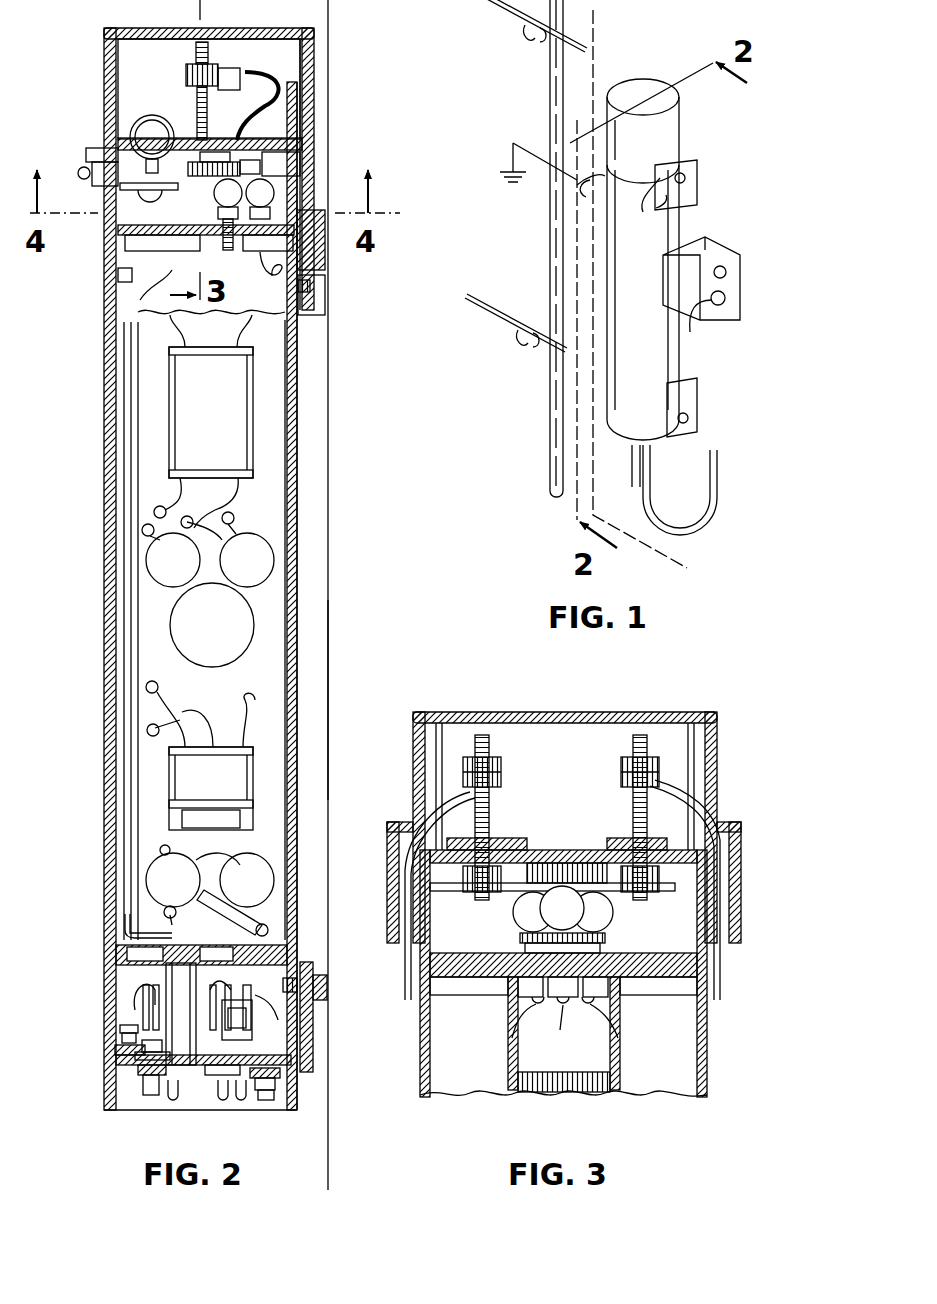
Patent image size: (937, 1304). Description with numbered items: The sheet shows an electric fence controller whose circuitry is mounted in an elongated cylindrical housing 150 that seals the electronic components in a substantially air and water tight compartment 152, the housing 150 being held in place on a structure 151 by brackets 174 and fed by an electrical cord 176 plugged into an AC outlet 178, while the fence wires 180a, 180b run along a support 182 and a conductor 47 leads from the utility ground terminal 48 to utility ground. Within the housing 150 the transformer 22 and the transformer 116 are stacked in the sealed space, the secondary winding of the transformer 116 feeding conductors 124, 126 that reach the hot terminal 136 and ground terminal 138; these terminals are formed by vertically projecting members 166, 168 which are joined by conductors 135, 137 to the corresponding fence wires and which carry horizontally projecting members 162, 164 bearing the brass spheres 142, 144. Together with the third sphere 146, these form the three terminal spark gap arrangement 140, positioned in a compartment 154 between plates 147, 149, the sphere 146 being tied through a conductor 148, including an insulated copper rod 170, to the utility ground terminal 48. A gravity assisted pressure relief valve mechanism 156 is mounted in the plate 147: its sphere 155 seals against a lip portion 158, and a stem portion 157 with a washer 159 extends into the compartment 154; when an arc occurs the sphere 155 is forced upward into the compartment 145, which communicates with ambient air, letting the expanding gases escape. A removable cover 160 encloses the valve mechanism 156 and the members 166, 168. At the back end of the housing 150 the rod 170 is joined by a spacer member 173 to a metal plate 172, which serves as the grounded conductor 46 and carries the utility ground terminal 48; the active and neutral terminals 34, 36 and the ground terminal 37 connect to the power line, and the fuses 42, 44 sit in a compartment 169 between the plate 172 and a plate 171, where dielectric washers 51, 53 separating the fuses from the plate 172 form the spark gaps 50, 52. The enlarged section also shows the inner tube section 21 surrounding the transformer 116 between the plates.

In FIG. 2, the inner tube section 21 is at (297, 633).
In FIG. 3, the inner tube section 21 is at (506, 1072).
In FIG. 2, the transformer 22 is at (175, 790).
In FIG. 2, the active terminal 34 is at (147, 1000).
In FIG. 2, the neutral terminal 36 is at (232, 968).
In FIG. 2, the ground terminal 37 is at (120, 1040).
In FIG. 2, the fuse 42 is at (180, 1100).
In FIG. 2, the fuse 44 is at (250, 1105).
In FIG. 2, the conductor 46 is at (112, 1063).
In FIG. 1, the conductor 47 is at (633, 470).
In FIG. 2, the utility ground terminal 48 is at (272, 1100).
In FIG. 2, the spark gap 50 is at (163, 1057).
In FIG. 2, the dielectric washer 51 is at (177, 1072).
In FIG. 2, the spark gap 52 is at (247, 1050).
In FIG. 2, the dielectric washer 53 is at (208, 1078).
In FIG. 2, the transformer 116 is at (182, 420).
In FIG. 3, the transformer 116 is at (562, 1086).
In FIG. 3, the conductor 124 is at (512, 1030).
In FIG. 3, the conductor 126 is at (618, 1030).
In FIG. 2, the conductor 135 is at (207, 130).
In FIG. 1, the conductor 135 is at (660, 212).
In FIG. 3, the conductor 135 is at (453, 800).
In FIG. 2, the hot terminal 136 is at (200, 80).
In FIG. 3, the hot terminal 136 is at (505, 770).
In FIG. 1, the conductor 137 is at (587, 200).
In FIG. 3, the conductor 137 is at (670, 772).
In FIG. 3, the ground terminal 138 is at (628, 774).
In FIG. 2, the three terminal spark gap arrangement 140 is at (283, 197).
In FIG. 3, the three terminal spark gap arrangement 140 is at (614, 946).
In FIG. 2, the terminal 142 is at (297, 177).
In FIG. 3, the terminal 142 is at (526, 914).
In FIG. 3, the terminal 144 is at (610, 906).
In FIG. 2, the compartment 145 is at (140, 66).
In FIG. 3, the compartment 145 is at (566, 750).
In FIG. 2, the terminal 146 is at (216, 198).
In FIG. 3, the terminal 146 is at (548, 904).
In FIG. 2, the plate 147 is at (297, 134).
In FIG. 3, the plate 147 is at (543, 848).
In FIG. 3, the conductor 148 is at (562, 1012).
In FIG. 2, the plate 149 is at (160, 233).
In FIG. 3, the plate 149 is at (475, 982).
In FIG. 2, the housing 150 is at (297, 560).
In FIG. 1, the housing 150 is at (658, 336).
In FIG. 2, the structure 151 is at (322, 682).
In FIG. 1, the structure 151 is at (649, 530).
In FIG. 2, the compartment 152 is at (297, 497).
In FIG. 3, the compartment 152 is at (653, 1068).
In FIG. 2, the compartment 154 is at (168, 220).
In FIG. 3, the compartment 154 is at (460, 924).
In FIG. 2, the sphere 155 is at (140, 125).
In FIG. 2, the pressure relief valve mechanism 156 is at (118, 126).
In FIG. 2, the stem portion 157 is at (140, 195).
In FIG. 2, the lip portion 158 is at (90, 152).
In FIG. 2, the washer 159 is at (150, 215).
In FIG. 2, the removable cover 160 is at (312, 103).
In FIG. 1, the removable cover 160 is at (680, 126).
In FIG. 3, the removable cover 160 is at (463, 712).
In FIG. 3, the horizontally projecting member 162 is at (462, 890).
In FIG. 3, the horizontally projecting member 164 is at (657, 888).
In FIG. 2, the vertically projecting member 166 is at (198, 52).
In FIG. 3, the vertically projecting member 166 is at (507, 813).
In FIG. 3, the vertically projecting member 168 is at (633, 812).
In FIG. 2, the compartment 169 is at (130, 1015).
In FIG. 2, the insulated copper rod 170 is at (127, 540).
In FIG. 2, the plate 171 is at (120, 968).
In FIG. 2, the metal plate 172 is at (200, 1102).
In FIG. 2, the spacer member 173 is at (170, 1085).
In FIG. 2, the bracket 174 is at (325, 300).
In FIG. 1, the bracket 174 is at (695, 187).
In FIG. 3, the bracket 174 is at (564, 882).
In FIG. 1, the electrical cord 176 is at (688, 512).
In FIG. 1, the AC outlet 178 is at (723, 322).
In FIG. 1, the fence wire 180a is at (494, 312).
In FIG. 1, the ground wire 180b is at (521, 12).
In FIG. 1, the support 182 is at (552, 440).